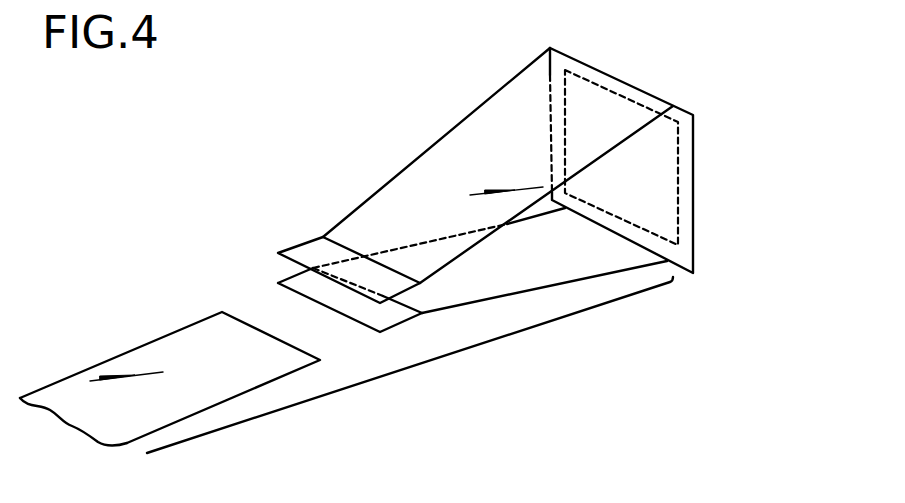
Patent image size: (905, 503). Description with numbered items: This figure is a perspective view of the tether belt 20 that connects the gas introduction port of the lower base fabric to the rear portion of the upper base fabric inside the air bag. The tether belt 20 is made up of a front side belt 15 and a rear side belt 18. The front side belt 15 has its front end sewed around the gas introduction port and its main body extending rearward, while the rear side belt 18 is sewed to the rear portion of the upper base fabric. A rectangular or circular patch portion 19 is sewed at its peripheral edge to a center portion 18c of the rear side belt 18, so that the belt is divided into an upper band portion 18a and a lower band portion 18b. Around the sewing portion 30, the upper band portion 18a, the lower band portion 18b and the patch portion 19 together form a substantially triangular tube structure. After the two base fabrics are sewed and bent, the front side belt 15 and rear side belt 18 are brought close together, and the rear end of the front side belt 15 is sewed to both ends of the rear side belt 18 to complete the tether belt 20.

The front side belt 15 is at (138, 350).
The rear side belt 18 is at (561, 190).
The upper band portion 18a is at (487, 143).
The lower band portion 18b is at (605, 262).
The center portion 18c is at (681, 160).
The patch portion 19 is at (693, 192).
The tether belt 20 is at (415, 365).
The sewing portion 30 is at (300, 237).